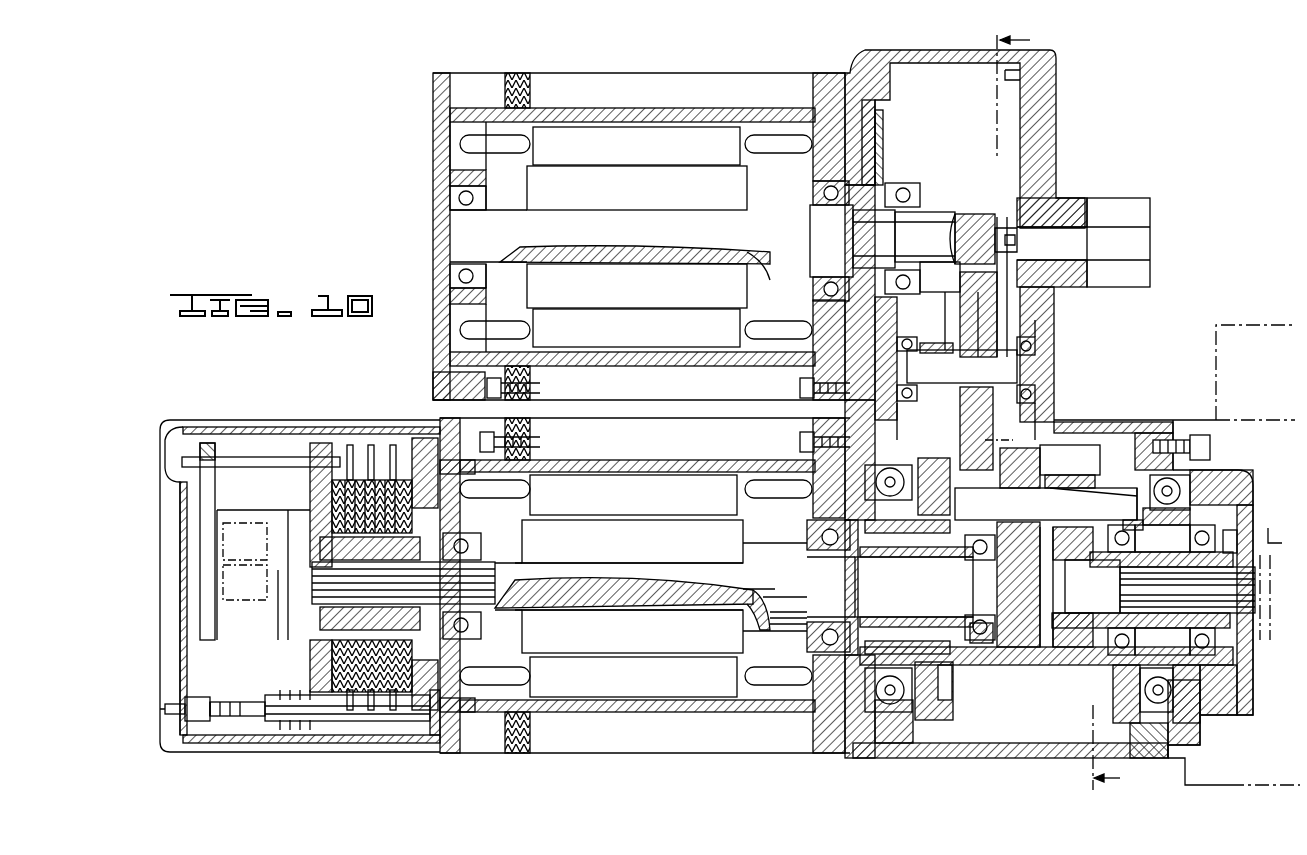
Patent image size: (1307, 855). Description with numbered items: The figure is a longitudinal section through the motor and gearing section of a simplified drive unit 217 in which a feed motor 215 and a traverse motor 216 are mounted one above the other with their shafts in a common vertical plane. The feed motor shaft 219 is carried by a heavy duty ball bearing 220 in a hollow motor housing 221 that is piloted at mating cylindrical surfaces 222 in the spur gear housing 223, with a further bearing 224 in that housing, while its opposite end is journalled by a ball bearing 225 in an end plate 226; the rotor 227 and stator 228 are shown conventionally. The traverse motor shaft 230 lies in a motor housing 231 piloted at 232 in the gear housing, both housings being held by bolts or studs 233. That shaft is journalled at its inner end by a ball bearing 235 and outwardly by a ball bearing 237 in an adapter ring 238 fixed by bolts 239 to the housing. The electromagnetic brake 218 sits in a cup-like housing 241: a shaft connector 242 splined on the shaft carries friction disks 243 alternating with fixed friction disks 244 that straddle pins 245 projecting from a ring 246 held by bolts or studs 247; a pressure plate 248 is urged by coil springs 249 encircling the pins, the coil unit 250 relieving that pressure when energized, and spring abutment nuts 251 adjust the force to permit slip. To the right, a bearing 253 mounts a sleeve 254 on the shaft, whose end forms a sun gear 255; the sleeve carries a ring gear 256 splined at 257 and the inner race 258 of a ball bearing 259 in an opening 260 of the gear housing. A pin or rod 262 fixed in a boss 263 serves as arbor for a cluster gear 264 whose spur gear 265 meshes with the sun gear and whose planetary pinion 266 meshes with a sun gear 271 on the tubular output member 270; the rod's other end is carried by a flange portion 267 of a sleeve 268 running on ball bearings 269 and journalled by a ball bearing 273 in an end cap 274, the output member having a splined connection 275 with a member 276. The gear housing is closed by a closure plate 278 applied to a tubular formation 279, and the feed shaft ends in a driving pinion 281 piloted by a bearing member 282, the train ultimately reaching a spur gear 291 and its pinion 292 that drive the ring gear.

The feed motor 215 is at (692, 70).
The traverse motor 216 is at (636, 453).
The drive unit 217 is at (414, 214).
The electromagnetic brake 218 is at (228, 410).
The feed motor shaft 219 is at (826, 238).
The ball bearing 220 is at (822, 195).
The motor housing 221 is at (712, 120).
The mating cylindrical surfaces 222 is at (880, 128).
The spur gear housing 223 is at (912, 58).
The bearing 224 is at (900, 200).
The ball bearing 225 is at (472, 198).
The end plate 226 is at (452, 112).
The rotor 227 is at (635, 237).
The stator 228 is at (636, 237).
The traverse motor shaft 230 is at (515, 565).
The motor housing 231 is at (810, 670).
The pilot 232 is at (805, 455).
The bolts or studs 233 is at (798, 392).
The ball bearing 235 is at (848, 570).
The ball bearing 237 is at (493, 563).
The adapter ring 238 is at (645, 576).
The bolts 239 is at (556, 440).
The cup-like housing 241 is at (282, 412).
The shaft connector 242 is at (412, 565).
The friction disks 243 is at (468, 487).
The friction disks 244 is at (392, 505).
The pins 245 is at (352, 712).
The ring 246 is at (468, 683).
The bolts or studs 247 is at (392, 452).
The pressure plate 248 is at (318, 487).
The coil springs 249 is at (288, 690).
The coil unit 250 is at (245, 505).
The spring abutment nuts 251 is at (262, 695).
The bearing 253 is at (965, 565).
The sleeve 254 is at (950, 655).
The sun gear 255 is at (1015, 615).
The ring gear 256 is at (965, 540).
The spline 257 is at (907, 539).
The inner race 258 is at (905, 660).
The ball bearing 259 is at (900, 475).
The opening 260 is at (905, 455).
The pin or rod 262 is at (1046, 480).
The boss 263 is at (960, 555).
The cluster gear 264 is at (1060, 420).
The spur gear 265 is at (1053, 473).
The planetary pinion 266 is at (1105, 480).
The flange portion 267 is at (1110, 480).
The sleeve 268 is at (1075, 500).
The ball bearings 269 is at (1140, 540).
The tubular output member 270 is at (1187, 590).
The sun gear 271 is at (1065, 560).
The ball bearing 273 is at (1220, 470).
The end cap 274 is at (1205, 455).
The splined connection 275 is at (1118, 600).
The member 276 is at (1276, 545).
The closure plate 278 is at (1042, 302).
The tubular formation 279 is at (1140, 432).
The driving pinion 281 is at (962, 234).
The bearing member 282 is at (1076, 247).
The spur gear 291 is at (975, 292).
The pinion 292 is at (940, 352).